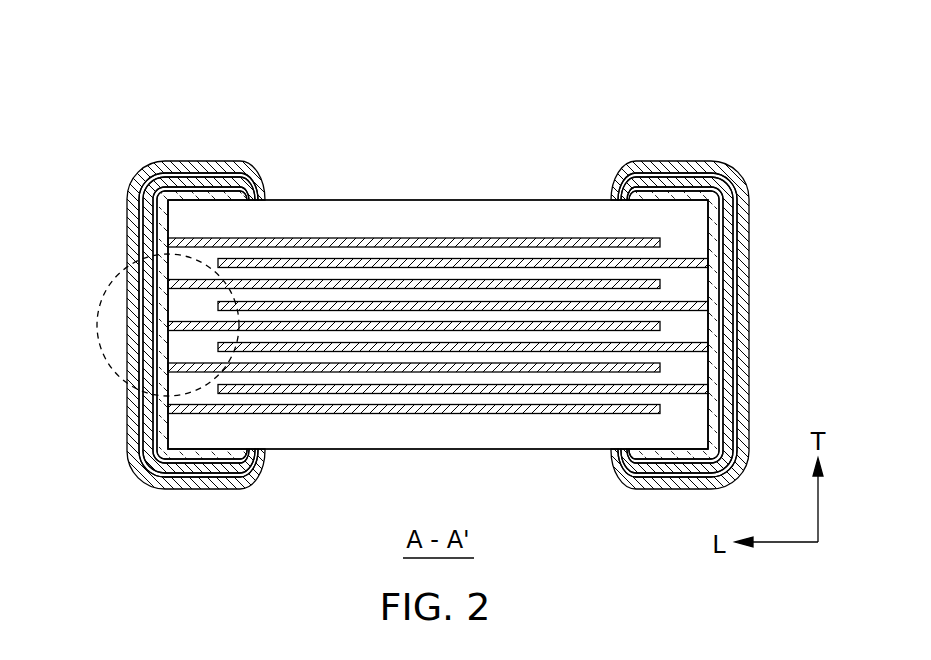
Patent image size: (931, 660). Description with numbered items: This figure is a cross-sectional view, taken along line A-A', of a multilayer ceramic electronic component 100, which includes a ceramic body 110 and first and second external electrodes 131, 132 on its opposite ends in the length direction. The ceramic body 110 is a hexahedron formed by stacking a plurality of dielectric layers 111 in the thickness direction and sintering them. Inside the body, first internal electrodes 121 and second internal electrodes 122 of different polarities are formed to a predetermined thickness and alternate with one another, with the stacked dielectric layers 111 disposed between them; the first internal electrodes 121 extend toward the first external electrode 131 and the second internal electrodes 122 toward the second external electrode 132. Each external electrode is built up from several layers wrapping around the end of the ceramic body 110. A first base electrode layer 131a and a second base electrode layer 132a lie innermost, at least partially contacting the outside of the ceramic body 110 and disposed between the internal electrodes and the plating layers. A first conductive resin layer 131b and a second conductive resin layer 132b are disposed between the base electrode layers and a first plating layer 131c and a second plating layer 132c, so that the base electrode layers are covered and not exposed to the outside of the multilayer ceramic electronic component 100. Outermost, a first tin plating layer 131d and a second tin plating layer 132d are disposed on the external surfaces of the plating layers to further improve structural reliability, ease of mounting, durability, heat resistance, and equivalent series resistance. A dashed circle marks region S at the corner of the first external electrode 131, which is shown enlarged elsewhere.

The multilayer ceramic electronic component 100 is at (419, 33).
The ceramic body 110 is at (492, 199).
The dielectric layer 111 is at (395, 253).
The first internal electrode 121 is at (345, 238).
The second internal electrode 122 is at (455, 262).
The first external electrode 131 is at (189, 271).
The first base electrode layer 131a is at (238, 280).
The first conductive resin layer 131b is at (218, 182).
The first plating layer 131c is at (160, 175).
The first tin plating layer 131d is at (127, 213).
The second external electrode 132 is at (687, 271).
The second base electrode layer 132a is at (637, 280).
The second conductive resin layer 132b is at (656, 182).
The second plating layer 132c is at (716, 175).
The second tin plating layer 132d is at (749, 213).
The region S is at (97, 325).